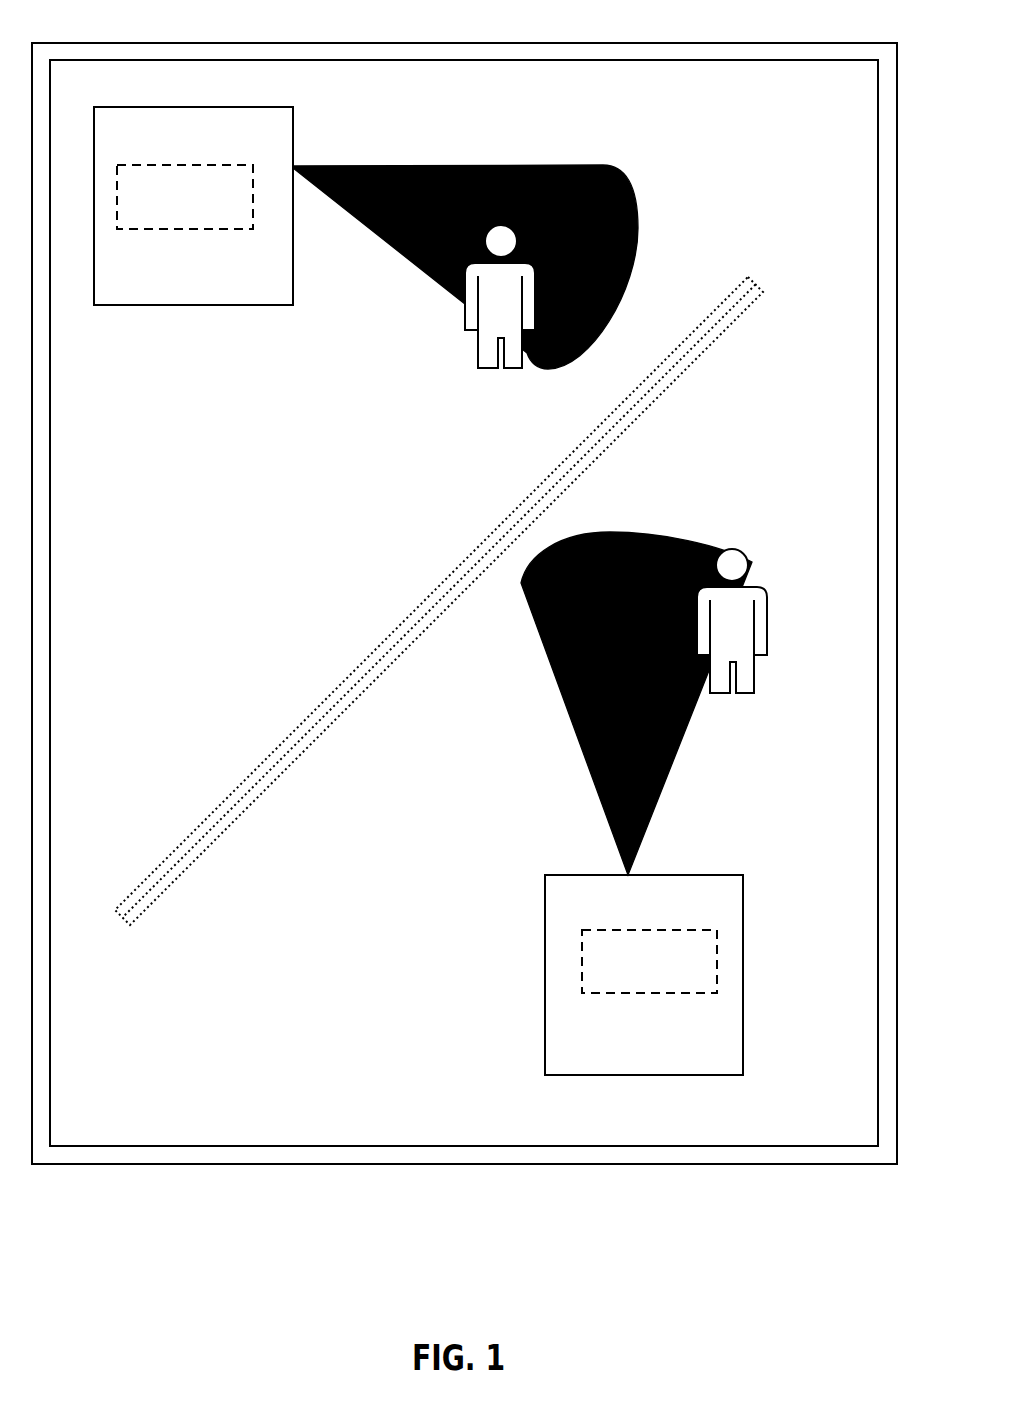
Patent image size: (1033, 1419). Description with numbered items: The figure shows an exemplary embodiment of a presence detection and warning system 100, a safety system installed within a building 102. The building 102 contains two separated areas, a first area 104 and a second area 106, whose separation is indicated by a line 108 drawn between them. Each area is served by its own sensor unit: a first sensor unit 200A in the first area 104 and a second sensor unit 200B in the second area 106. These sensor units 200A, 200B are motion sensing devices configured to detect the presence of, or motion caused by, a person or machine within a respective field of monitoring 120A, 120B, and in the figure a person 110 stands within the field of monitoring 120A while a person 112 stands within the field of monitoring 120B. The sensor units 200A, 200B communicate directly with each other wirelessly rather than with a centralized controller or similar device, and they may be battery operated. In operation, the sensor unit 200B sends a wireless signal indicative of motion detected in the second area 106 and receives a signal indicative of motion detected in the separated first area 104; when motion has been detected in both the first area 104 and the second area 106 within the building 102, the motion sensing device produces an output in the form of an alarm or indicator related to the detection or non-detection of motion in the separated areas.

The presence detection and warning system 100 is at (752, 112).
The building 102 is at (740, 42).
The first area 104 is at (352, 396).
The second area 106 is at (495, 809).
The line 108 is at (755, 283).
The person 110 is at (529, 269).
The person 112 is at (752, 547).
The field of monitoring 120A is at (394, 219).
The field of monitoring 120B is at (609, 681).
The sensor unit 200A is at (193, 206).
The sensor unit 200B is at (644, 975).